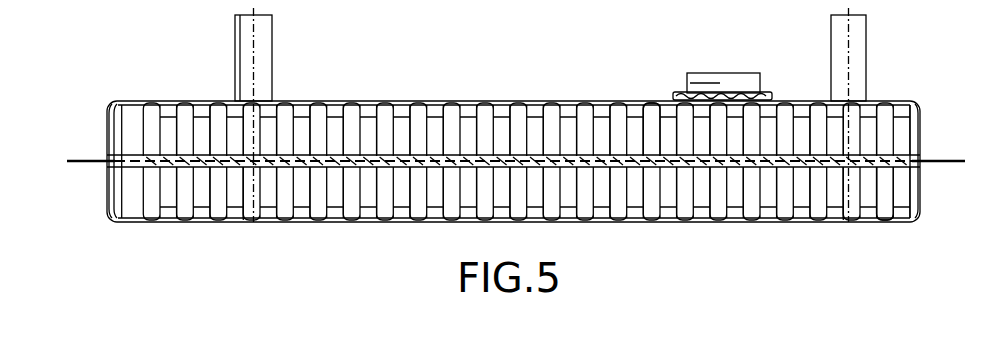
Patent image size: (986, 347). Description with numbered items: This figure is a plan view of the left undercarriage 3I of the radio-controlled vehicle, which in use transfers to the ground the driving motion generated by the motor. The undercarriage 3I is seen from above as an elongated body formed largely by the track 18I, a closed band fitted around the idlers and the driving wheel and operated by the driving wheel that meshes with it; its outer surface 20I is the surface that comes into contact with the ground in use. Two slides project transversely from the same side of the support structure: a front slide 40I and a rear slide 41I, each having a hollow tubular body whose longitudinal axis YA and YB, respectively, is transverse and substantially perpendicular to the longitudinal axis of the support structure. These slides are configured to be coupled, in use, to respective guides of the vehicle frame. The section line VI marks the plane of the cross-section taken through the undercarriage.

The left undercarriage 3I is at (112, 100).
The front slide 40I is at (260, 68).
The rear slide 41I is at (862, 58).
The track 18I is at (632, 200).
The outer surface 20I is at (868, 190).
The longitudinal axis of the front slide YA is at (250, 210).
The longitudinal axis of the rear slide YB is at (847, 197).
The section line VI- VI is at (88, 163).